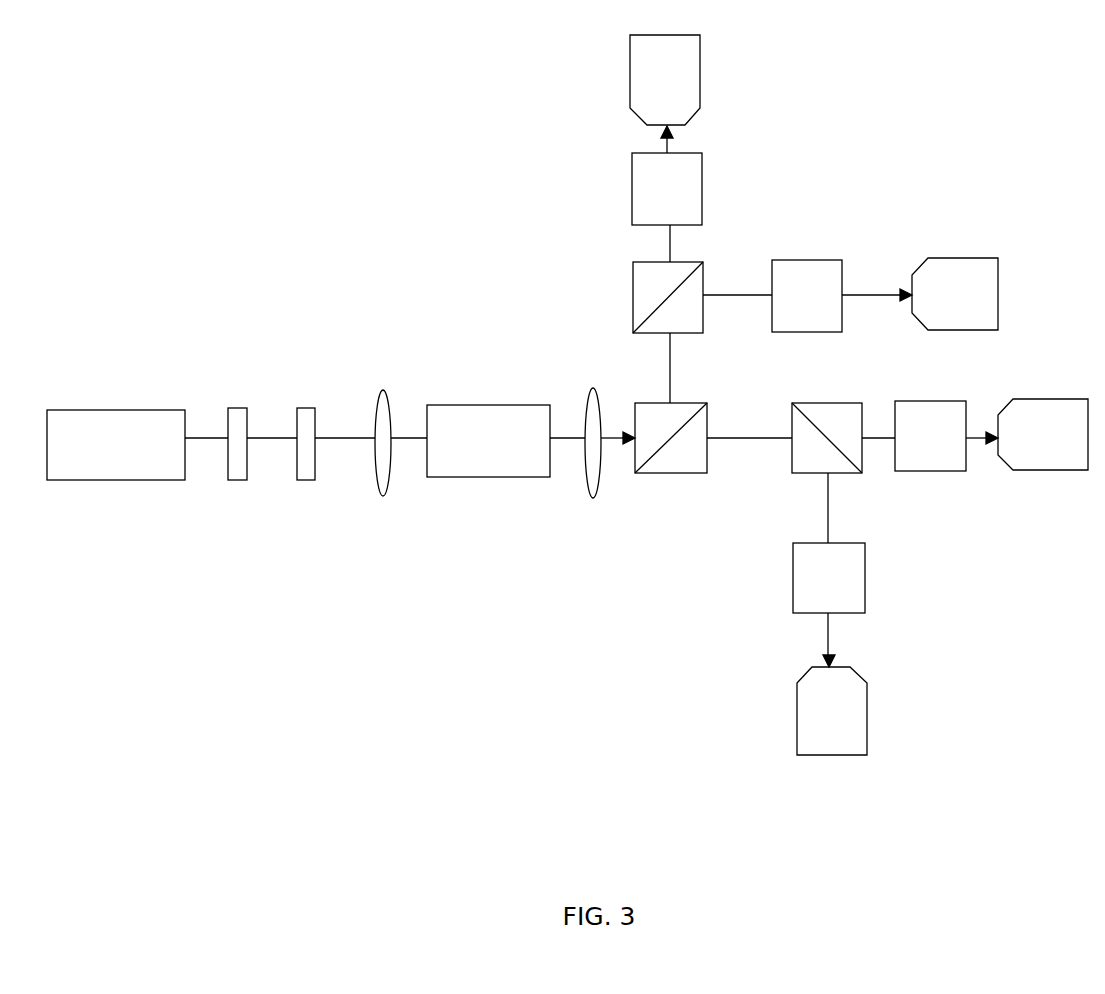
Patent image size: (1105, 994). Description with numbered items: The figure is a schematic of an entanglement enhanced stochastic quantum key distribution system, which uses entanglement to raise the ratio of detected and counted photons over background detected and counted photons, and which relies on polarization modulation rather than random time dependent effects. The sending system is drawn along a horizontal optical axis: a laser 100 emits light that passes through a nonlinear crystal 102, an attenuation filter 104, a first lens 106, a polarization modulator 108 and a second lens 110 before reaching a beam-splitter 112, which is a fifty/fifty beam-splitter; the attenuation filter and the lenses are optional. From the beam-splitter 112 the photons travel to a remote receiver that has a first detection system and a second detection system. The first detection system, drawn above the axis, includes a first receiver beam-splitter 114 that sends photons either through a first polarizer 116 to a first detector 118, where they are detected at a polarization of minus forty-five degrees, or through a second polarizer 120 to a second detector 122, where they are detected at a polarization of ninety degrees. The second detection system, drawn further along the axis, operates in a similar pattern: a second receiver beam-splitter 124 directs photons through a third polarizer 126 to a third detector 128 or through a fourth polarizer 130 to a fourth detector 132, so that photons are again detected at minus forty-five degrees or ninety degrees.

The laser 100 is at (138, 457).
The nonlinear crystal 102 is at (237, 457).
The attenuation filter 104 is at (307, 422).
The first lens 106 is at (378, 457).
The polarization modulator 108 is at (445, 467).
The second lens 110 is at (597, 462).
The beam-splitter 112 is at (670, 460).
The first receiver beam-splitter 114 is at (645, 297).
The first polarizer 116 is at (648, 197).
The first detector 118 is at (683, 95).
The second polarizer 120 is at (788, 272).
The second detector 122 is at (955, 275).
The second receiver beam-splitter 124 is at (847, 457).
The third polarizer 126 is at (953, 462).
The third detector 128 is at (1032, 453).
The fourth polarizer 130 is at (810, 578).
The fourth detector 132 is at (852, 702).